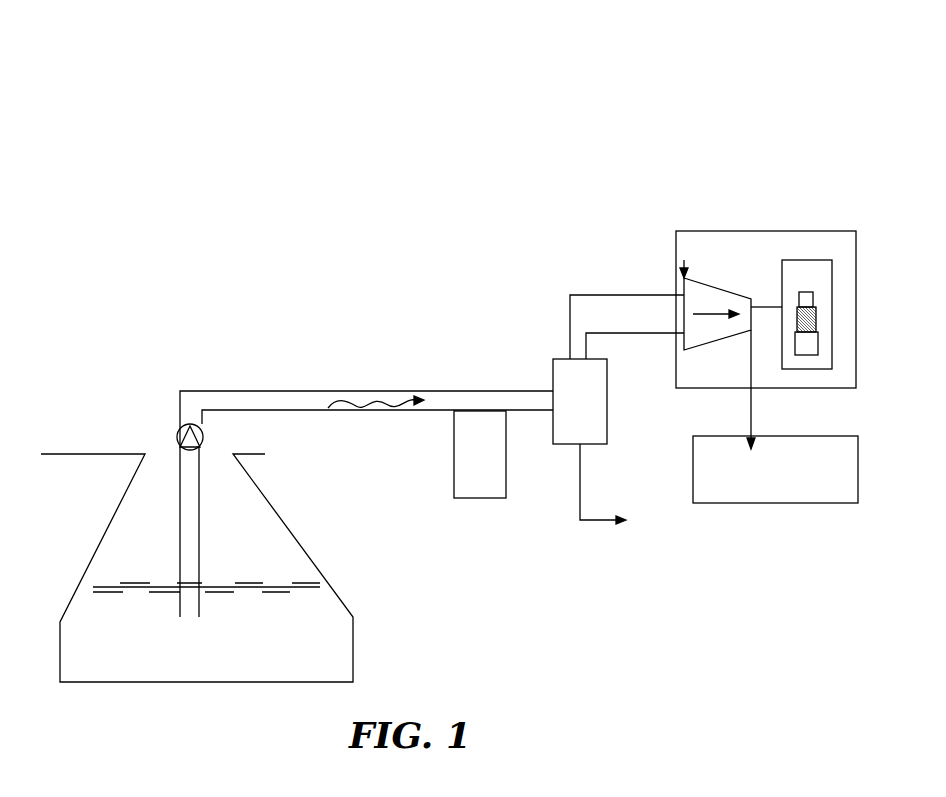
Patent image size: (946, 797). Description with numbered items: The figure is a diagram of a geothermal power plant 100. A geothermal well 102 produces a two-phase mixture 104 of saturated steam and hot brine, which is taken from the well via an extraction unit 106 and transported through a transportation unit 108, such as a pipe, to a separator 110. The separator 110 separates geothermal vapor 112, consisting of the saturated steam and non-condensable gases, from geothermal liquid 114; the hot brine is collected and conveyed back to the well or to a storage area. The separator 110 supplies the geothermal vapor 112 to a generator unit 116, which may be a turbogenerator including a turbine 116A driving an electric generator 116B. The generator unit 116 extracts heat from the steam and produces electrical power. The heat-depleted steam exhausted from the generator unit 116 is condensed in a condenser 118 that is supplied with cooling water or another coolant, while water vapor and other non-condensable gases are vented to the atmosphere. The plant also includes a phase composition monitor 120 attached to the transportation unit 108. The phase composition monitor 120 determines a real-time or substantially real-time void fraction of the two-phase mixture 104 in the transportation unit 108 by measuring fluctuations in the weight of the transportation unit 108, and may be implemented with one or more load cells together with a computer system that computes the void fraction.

The geothermal power plant 100 is at (790, 94).
The geothermal well 102 is at (262, 562).
The two-phase mixture 104 is at (368, 392).
The extraction unit 106 is at (178, 430).
The transportation unit 108 is at (232, 391).
The separator 110 is at (566, 404).
The geothermal vapor 112 is at (613, 330).
The geothermal liquid 114 is at (632, 529).
The generator unit 116 is at (753, 252).
The turbine 116A is at (688, 300).
The electric generator 116B is at (827, 338).
The condenser 118 is at (766, 492).
The phase composition monitor 120 is at (466, 462).